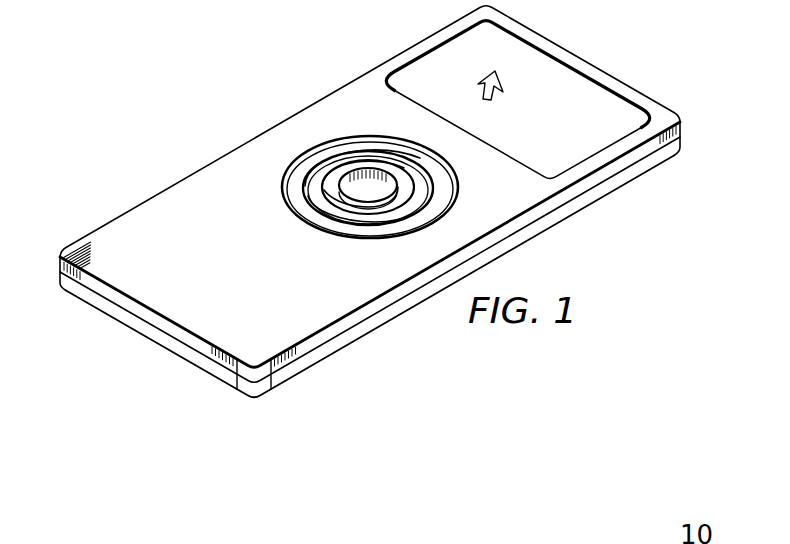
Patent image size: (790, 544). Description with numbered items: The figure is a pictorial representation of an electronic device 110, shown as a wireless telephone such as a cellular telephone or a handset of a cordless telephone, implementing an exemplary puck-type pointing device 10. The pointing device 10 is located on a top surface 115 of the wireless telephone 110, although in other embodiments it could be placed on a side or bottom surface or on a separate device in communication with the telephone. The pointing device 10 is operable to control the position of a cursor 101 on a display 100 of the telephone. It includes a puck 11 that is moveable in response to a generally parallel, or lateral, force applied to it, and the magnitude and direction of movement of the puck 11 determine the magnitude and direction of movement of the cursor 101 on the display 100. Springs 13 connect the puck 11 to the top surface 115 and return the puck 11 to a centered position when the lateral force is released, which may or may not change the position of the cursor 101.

The puck-type pointing device 10 is at (370, 198).
The electronic device 110 is at (370, 202).
The top surface 115 is at (187, 187).
The display 100 is at (550, 72).
The cursor 101 is at (490, 99).
The springs 13 is at (284, 188).
The puck 11 is at (373, 180).